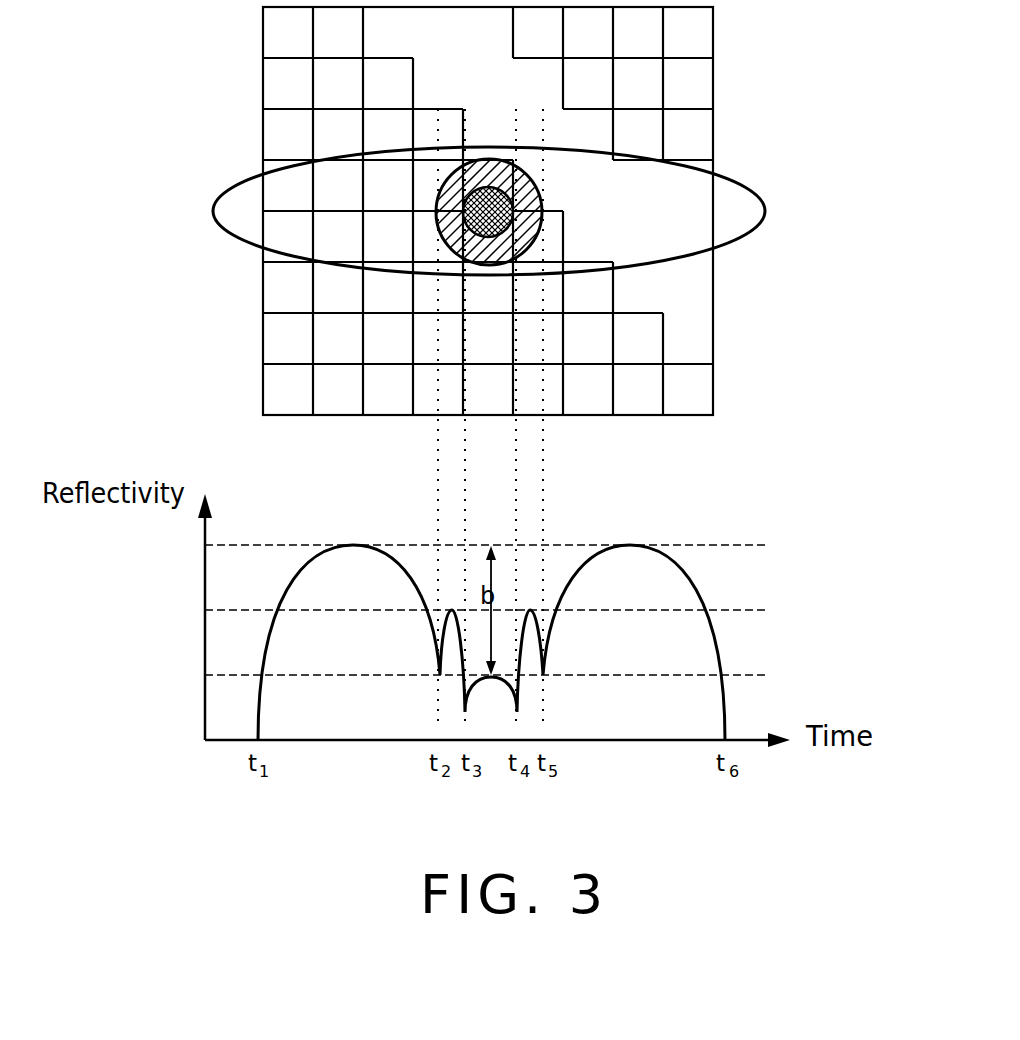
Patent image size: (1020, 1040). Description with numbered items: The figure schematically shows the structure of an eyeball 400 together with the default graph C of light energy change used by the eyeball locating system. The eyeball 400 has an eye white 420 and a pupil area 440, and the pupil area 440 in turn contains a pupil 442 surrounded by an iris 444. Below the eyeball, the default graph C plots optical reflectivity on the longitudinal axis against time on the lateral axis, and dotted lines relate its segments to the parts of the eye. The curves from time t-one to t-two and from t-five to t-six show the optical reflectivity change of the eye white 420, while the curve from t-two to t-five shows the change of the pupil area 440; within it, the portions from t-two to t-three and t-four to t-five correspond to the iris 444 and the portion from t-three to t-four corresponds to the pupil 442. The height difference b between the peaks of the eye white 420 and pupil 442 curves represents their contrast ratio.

The eyeball 400 is at (788, 172).
The eye white 420 is at (688, 233).
The pupil area 440 is at (328, 196).
The pupil 442 is at (437, 208).
The iris 444 is at (460, 255).
The default graph C is at (695, 586).